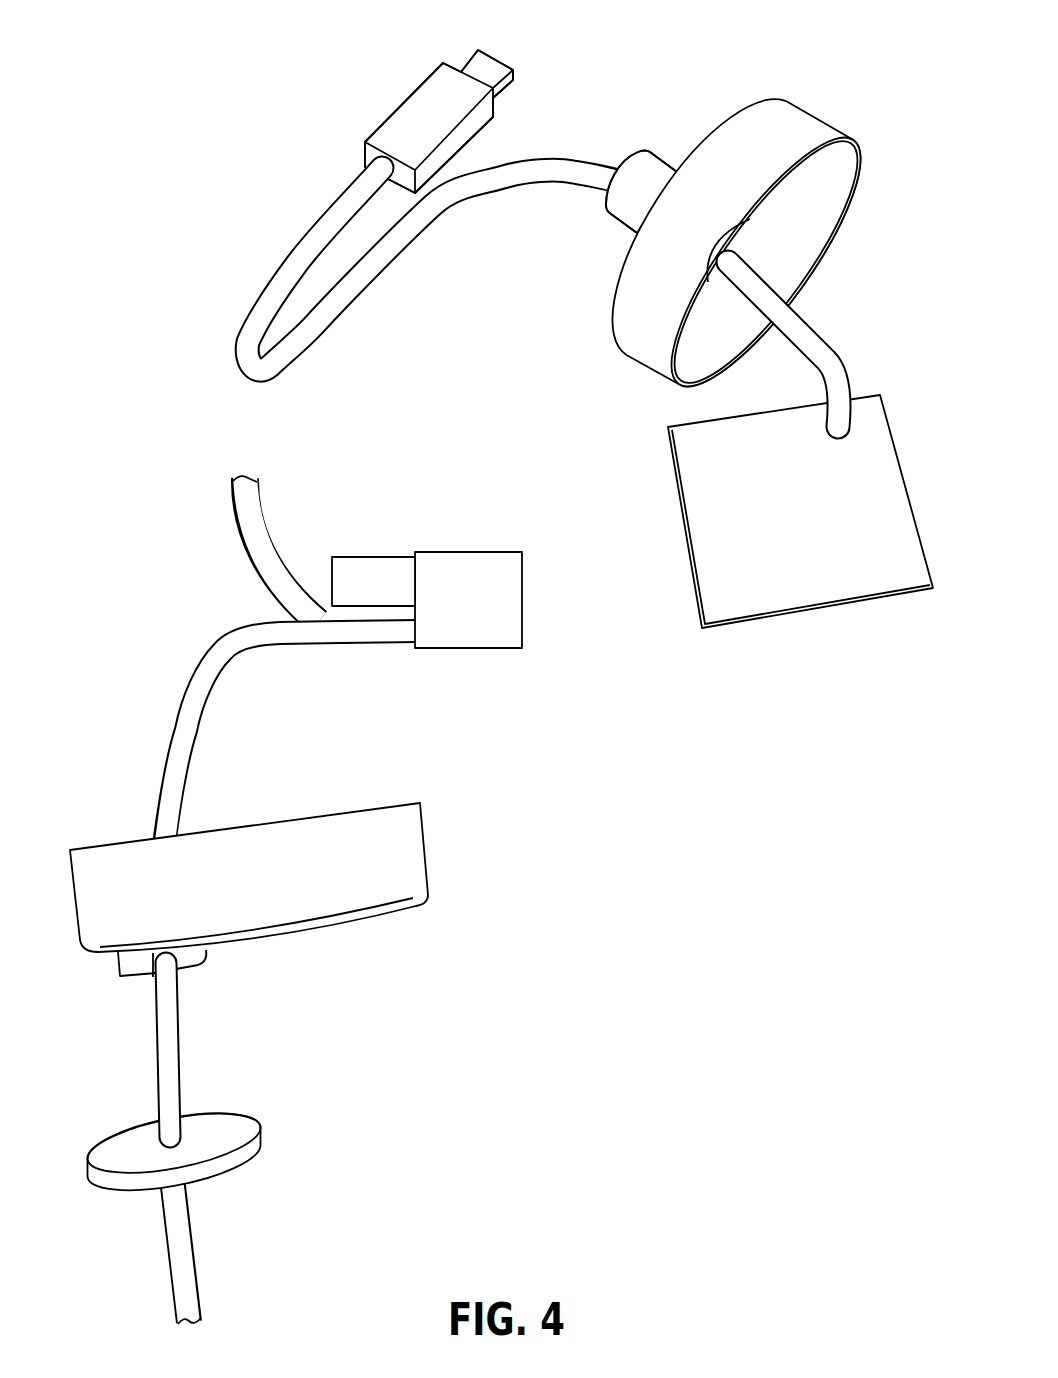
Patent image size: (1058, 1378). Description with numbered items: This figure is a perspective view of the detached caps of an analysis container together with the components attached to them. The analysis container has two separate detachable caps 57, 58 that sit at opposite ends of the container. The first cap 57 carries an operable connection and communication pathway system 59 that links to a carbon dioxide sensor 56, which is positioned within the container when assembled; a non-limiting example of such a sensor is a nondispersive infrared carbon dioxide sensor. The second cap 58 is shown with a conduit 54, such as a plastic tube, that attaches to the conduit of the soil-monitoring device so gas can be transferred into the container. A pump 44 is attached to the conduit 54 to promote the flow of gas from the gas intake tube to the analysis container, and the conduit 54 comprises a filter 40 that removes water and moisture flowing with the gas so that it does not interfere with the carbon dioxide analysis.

The operable connection and communication pathway system 59 is at (598, 176).
The detachable cap 57 is at (812, 124).
The carbon dioxide sensor 56 is at (888, 442).
The pump 44 is at (487, 643).
The detachable cap 58 is at (92, 908).
The filter 40 is at (135, 1152).
The conduit 54 is at (175, 1242).